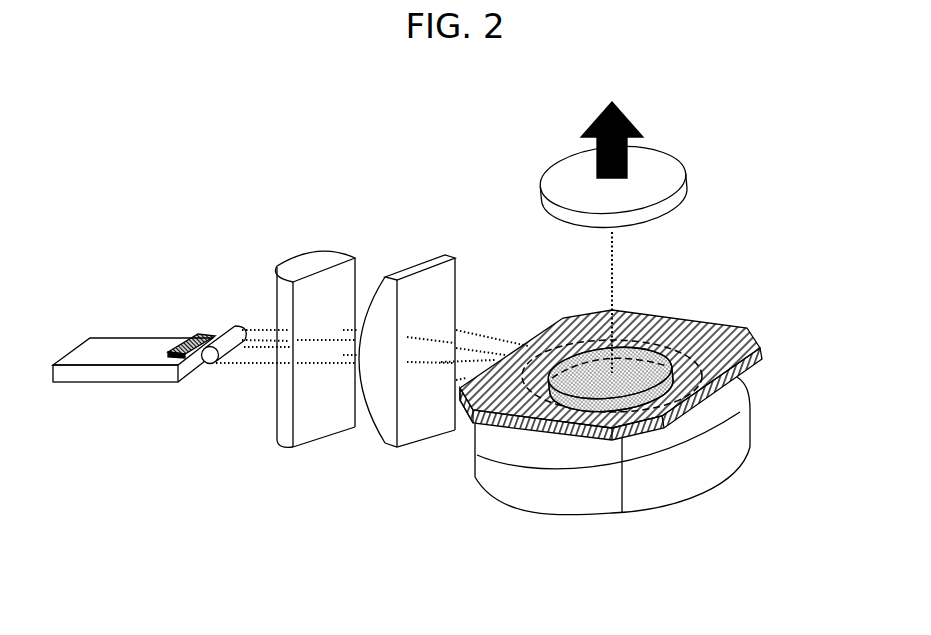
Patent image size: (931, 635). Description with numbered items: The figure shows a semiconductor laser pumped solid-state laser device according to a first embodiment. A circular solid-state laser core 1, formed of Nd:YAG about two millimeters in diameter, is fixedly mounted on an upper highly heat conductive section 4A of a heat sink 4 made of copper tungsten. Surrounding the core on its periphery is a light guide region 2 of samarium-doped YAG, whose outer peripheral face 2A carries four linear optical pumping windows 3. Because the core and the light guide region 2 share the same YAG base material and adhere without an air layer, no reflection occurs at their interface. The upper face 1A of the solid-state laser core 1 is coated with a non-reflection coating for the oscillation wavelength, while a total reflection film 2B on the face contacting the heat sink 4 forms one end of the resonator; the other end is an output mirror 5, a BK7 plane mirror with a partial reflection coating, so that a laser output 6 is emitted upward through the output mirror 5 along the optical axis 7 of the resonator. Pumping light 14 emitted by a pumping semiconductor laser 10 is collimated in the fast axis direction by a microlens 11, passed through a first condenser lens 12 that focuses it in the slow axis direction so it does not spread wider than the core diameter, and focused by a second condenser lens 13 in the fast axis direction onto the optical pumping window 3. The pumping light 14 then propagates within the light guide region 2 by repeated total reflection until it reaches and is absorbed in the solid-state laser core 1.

The solid-state laser core 1 is at (650, 337).
The face of the solid-state laser core 1A is at (587, 368).
The light guide region 2 is at (755, 335).
The outer peripheral face 2A is at (758, 363).
The total reflection film 2B is at (472, 417).
The optical pumping window 3 is at (713, 397).
The heat sink 4 is at (665, 478).
The upper highly heat conductive section 4A is at (622, 513).
The output mirror 5 is at (653, 167).
The laser output 6 is at (632, 123).
The optical axis 7 is at (610, 253).
The pumping semiconductor laser 10 is at (200, 334).
The microlens 11 is at (238, 326).
The first condenser lens 12 is at (310, 262).
The second condenser lens 13 is at (432, 278).
The pumping light 14 is at (247, 367).